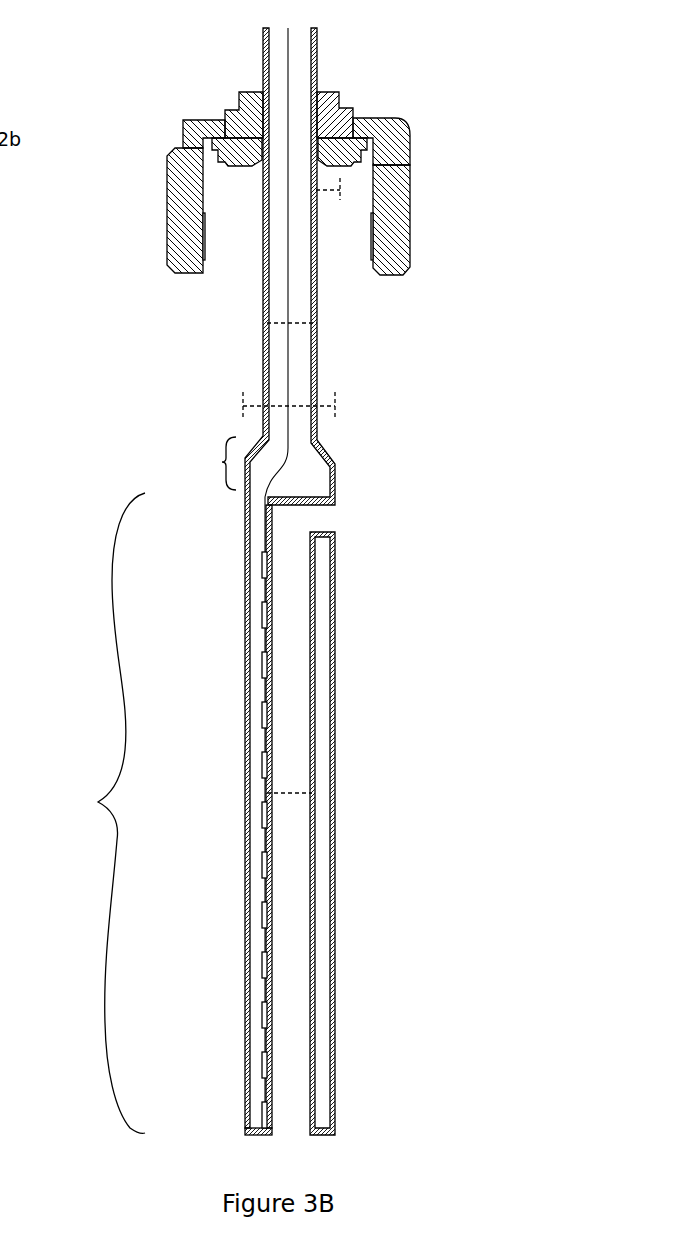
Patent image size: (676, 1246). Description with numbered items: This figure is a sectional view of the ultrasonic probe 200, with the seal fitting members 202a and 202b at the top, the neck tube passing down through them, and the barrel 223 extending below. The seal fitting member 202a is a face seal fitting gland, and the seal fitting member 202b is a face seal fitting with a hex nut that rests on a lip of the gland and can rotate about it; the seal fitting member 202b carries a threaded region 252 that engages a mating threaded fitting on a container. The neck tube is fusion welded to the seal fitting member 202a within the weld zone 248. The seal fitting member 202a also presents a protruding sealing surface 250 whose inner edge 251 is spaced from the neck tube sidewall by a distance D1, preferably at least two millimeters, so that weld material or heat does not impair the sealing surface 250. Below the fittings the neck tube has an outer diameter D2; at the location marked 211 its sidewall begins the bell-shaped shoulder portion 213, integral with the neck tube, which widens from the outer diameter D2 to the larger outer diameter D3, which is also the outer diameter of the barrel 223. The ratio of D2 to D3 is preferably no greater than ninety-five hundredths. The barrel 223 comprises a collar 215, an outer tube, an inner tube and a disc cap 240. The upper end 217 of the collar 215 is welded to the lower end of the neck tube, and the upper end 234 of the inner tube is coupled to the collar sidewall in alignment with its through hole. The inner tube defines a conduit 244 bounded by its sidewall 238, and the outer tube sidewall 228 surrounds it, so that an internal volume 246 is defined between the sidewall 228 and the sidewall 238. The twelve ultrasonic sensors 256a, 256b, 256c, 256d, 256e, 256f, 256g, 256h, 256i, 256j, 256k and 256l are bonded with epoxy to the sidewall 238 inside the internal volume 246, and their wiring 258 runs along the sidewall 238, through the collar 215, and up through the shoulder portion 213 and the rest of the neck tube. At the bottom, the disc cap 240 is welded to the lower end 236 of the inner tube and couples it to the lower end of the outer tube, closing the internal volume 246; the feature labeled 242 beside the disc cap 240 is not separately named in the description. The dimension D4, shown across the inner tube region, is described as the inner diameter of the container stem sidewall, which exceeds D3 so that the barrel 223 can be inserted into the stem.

The ultrasonic probe 200 is at (112, 95).
The seal fitting member 202a is at (338, 92).
The seal fitting member 202b is at (395, 118).
The weld zone 248 is at (251, 165).
The protruding sealing surface 250 is at (350, 163).
The inner edge 251 is at (333, 164).
The threaded region 252 is at (203, 228).
The distance D1 is at (330, 190).
The outer diameter of neck tube D2 is at (297, 323).
The outer diameter of barrel D3 is at (300, 406).
The inner diameter D4 is at (263, 800).
The portion of sidewall 211 is at (318, 432).
The shoulder portion 213 is at (222, 462).
The collar 215 is at (247, 500).
The upper end of collar 217 is at (335, 503).
The upper end of inner tube 234 is at (325, 508).
The wiring 258 is at (266, 514).
The ultrasonic sensor 256a is at (262, 565).
The ultrasonic sensor 256b is at (262, 615).
The ultrasonic sensor 256c is at (262, 665).
The ultrasonic sensor 256d is at (262, 715).
The ultrasonic sensor 256e is at (262, 765).
The ultrasonic sensor 256f is at (262, 815).
The ultrasonic sensor 256g is at (262, 865).
The ultrasonic sensor 256h is at (262, 915).
The ultrasonic sensor 256i is at (262, 965).
The ultrasonic sensor 256j is at (262, 1015).
The ultrasonic sensor 256k is at (262, 1065).
The ultrasonic sensor 256l is at (262, 1115).
The barrel 223 is at (98, 802).
The conduit 244 is at (288, 770).
The internal volume 246 is at (255, 940).
The sidewall of outer tube 228 is at (335, 922).
The sidewall of inner tube 238 is at (312, 1003).
The disc cap 240 is at (337, 1133).
The distal opening 242 is at (308, 1135).
The lower end of inner tube 236 is at (273, 1127).